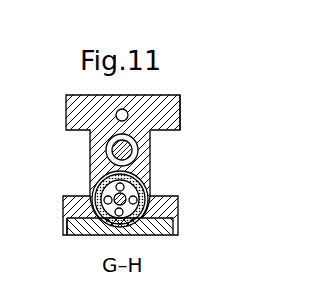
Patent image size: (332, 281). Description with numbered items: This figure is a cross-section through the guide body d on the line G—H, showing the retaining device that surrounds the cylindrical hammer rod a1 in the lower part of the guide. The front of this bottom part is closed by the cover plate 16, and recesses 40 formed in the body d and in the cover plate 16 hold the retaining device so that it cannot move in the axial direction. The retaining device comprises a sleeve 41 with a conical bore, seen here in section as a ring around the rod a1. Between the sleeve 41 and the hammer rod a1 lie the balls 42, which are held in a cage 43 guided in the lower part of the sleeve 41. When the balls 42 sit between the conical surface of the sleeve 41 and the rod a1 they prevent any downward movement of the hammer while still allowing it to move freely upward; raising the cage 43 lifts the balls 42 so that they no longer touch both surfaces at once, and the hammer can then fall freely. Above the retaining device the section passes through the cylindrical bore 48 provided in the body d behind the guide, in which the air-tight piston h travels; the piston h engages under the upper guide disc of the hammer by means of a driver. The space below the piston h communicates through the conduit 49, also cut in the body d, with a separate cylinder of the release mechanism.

The cover plate 16 is at (157, 236).
The recess 40 is at (142, 180).
The sleeve 41 is at (146, 193).
The ball 42 is at (100, 236).
The cage 43 is at (97, 188).
The cylindrical bore 48 is at (106, 150).
The conduit 49 is at (116, 114).
The hammer rod a1 is at (70, 218).
The guide body d is at (155, 108).
The piston h is at (113, 155).